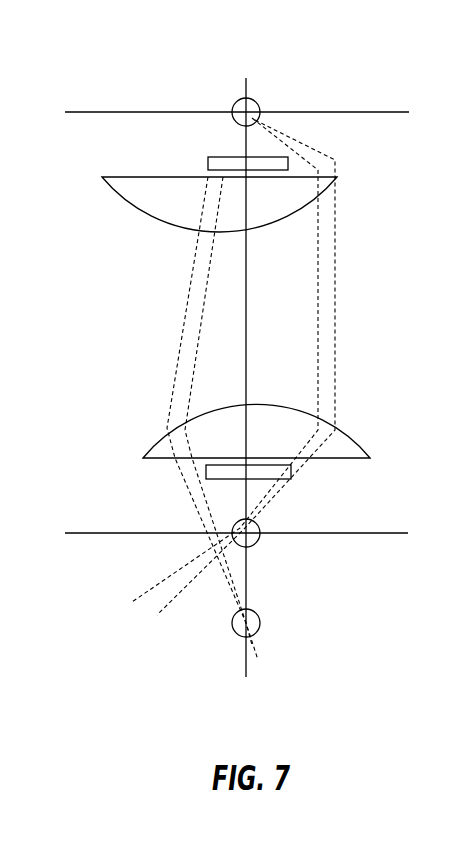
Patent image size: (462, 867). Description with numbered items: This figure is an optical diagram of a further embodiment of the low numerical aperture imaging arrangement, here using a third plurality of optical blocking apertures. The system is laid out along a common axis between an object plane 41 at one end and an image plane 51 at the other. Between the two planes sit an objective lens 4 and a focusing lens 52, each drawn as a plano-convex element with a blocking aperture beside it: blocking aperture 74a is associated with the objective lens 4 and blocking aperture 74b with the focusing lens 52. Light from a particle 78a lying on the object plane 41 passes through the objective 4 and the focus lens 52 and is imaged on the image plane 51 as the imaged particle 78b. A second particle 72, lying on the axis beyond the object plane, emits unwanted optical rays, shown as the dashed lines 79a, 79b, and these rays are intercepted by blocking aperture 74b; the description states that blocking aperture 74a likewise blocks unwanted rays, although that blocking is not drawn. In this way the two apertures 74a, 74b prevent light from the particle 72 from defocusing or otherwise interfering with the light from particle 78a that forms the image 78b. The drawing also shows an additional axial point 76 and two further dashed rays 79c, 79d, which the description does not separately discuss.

The objective lens 4 is at (358, 435).
The object plane 41 is at (383, 534).
The image plane 51 is at (377, 112).
The focusing lens 52 is at (138, 177).
The particle 72 is at (243, 668).
The blocking aperture 74a is at (293, 481).
The blocking aperture 74b is at (225, 157).
The focal point / image point 76 is at (258, 620).
The particle 78a is at (256, 543).
The imaged particle 78b is at (256, 98).
The unwanted optical ray 79a is at (188, 300).
The unwanted optical ray 79b is at (190, 368).
The light ray 79c is at (330, 277).
The light ray 79d is at (340, 333).